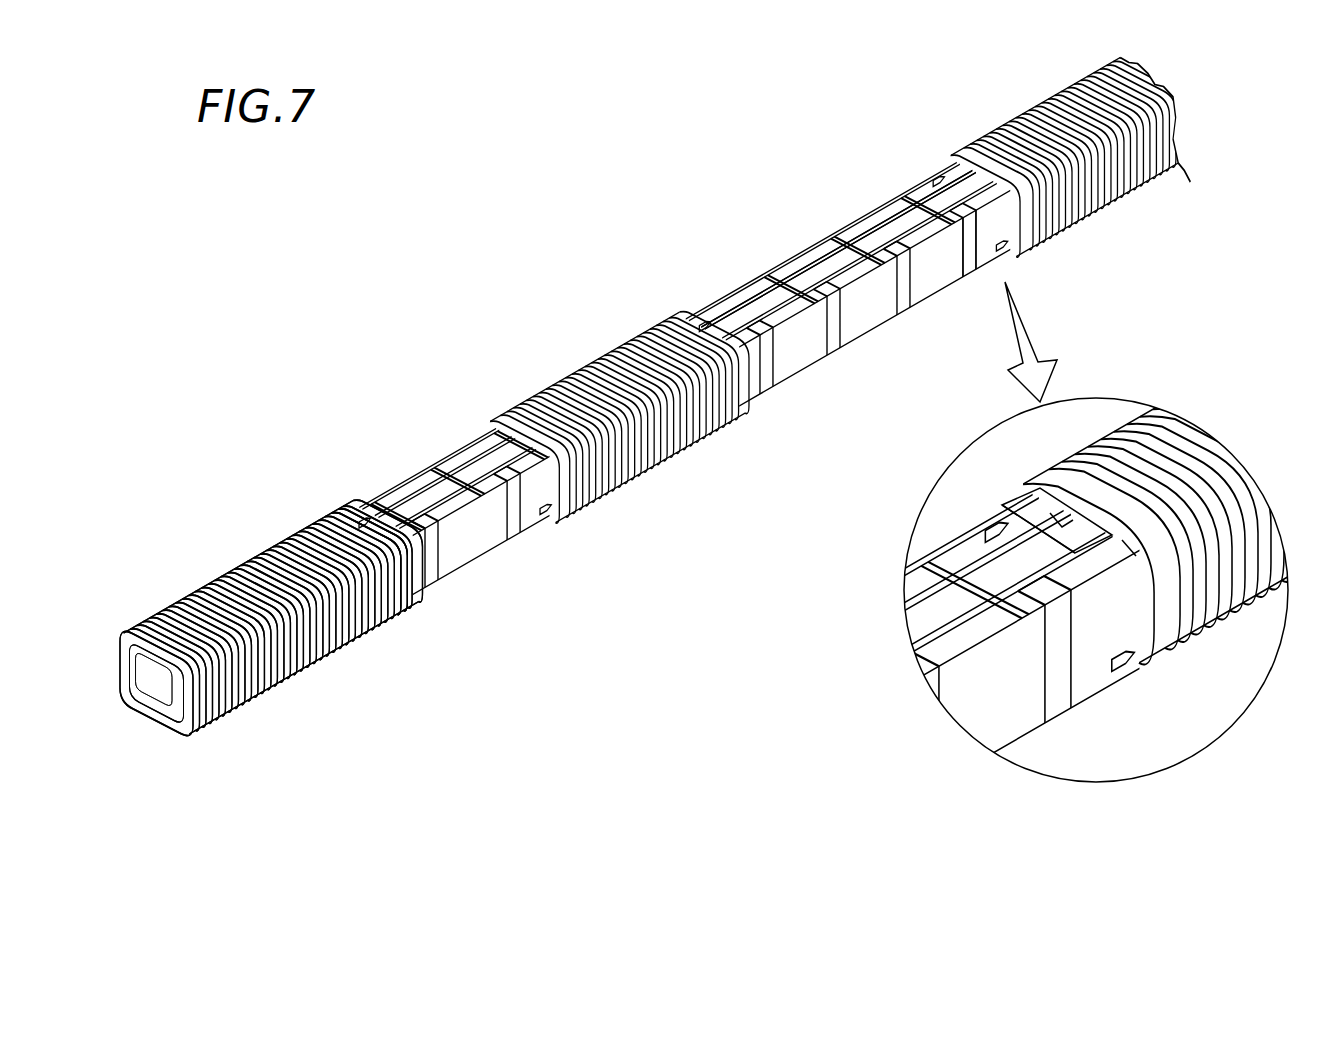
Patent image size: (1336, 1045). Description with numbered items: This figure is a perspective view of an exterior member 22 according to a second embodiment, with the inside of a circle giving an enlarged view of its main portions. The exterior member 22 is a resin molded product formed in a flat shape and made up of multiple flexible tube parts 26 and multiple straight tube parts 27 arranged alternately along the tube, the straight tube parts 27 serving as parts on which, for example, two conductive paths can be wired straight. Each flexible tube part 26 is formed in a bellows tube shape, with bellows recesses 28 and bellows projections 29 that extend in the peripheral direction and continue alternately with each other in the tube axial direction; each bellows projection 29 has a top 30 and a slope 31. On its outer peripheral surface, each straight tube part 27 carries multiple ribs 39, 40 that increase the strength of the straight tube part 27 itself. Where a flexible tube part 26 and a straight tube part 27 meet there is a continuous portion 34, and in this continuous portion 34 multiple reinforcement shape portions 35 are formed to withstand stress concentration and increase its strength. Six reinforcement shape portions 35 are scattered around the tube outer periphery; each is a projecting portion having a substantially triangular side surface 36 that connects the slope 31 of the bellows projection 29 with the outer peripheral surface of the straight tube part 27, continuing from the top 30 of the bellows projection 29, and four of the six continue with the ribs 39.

The exterior member 22 is at (458, 260).
The flexible tube part 26 is at (162, 614).
The straight tube part 27 is at (418, 482).
The bellows recess 28 is at (348, 642).
The bellows projection 29 is at (362, 632).
The top 30 is at (1037, 493).
The slope 31 is at (1002, 503).
The continuous portion 34 is at (1043, 523).
The reinforcement shape portion 35 is at (553, 503).
The substantially triangular side surface 36 is at (1128, 548).
The rib 39 is at (886, 215).
The rib 40 is at (970, 256).